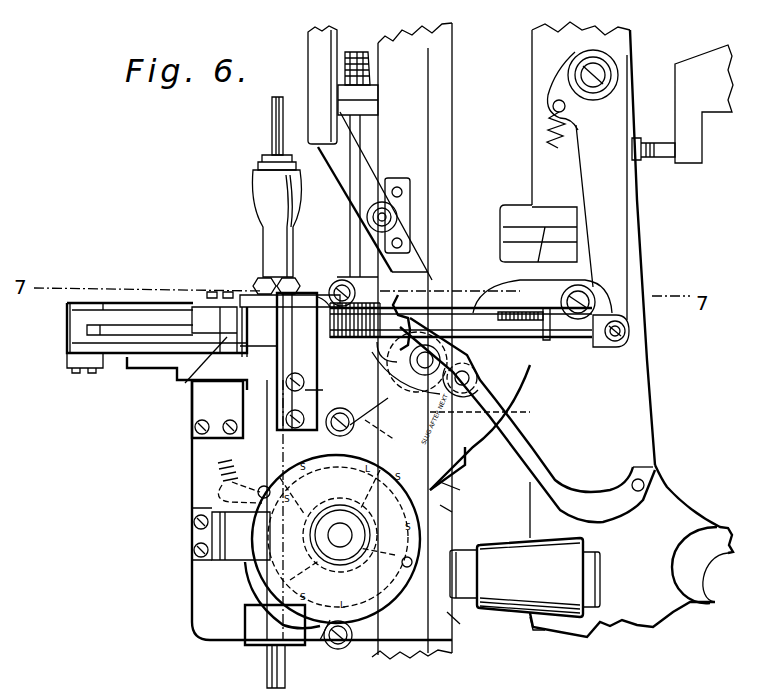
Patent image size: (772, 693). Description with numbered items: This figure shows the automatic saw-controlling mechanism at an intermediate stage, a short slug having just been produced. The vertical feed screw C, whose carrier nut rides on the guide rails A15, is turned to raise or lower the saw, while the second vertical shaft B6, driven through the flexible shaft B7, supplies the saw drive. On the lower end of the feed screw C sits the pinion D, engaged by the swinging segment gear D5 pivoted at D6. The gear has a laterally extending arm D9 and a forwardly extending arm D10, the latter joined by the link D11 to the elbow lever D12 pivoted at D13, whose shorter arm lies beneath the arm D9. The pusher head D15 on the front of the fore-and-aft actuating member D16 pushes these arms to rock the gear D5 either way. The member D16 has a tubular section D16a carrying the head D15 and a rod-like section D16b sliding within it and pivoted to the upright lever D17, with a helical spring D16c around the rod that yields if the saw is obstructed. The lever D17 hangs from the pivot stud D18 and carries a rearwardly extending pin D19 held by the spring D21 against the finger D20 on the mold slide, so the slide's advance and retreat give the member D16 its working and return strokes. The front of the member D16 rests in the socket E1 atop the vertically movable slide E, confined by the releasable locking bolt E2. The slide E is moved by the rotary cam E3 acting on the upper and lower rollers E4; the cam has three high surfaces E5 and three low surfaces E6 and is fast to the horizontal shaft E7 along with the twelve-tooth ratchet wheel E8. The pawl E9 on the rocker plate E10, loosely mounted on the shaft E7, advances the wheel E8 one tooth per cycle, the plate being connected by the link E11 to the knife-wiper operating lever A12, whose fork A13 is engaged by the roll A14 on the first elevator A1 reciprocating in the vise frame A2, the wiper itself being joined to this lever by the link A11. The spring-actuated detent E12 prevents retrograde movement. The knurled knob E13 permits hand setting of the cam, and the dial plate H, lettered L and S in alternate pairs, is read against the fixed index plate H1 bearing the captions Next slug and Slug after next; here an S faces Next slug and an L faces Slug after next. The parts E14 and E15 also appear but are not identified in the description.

The first elevator A1 is at (448, 129).
The vise frame A2 is at (577, 243).
The link A11 is at (638, 470).
The operating lever A12 is at (568, 502).
The fork A13 is at (294, 368).
The roll A14 is at (398, 216).
The guide rails A15 is at (308, 38).
The second vertical shaft B6 is at (272, 130).
The flexible shaft B7 is at (268, 666).
The feed screw C is at (362, 55).
The pinion D is at (384, 298).
The segment gear D5 is at (176, 306).
The pivot D6 is at (248, 278).
The laterally extending arm D9 is at (200, 318).
The forwardly extending arm D10 is at (110, 316).
The link D11 is at (68, 363).
The elbow lever D12 is at (175, 345).
The pivot D13 is at (226, 339).
The pusher head D15 is at (247, 364).
The actuating member D16 is at (461, 320).
The tubular section D16a is at (484, 342).
The rod-like section D16b is at (574, 347).
The helical spring D16c is at (542, 310).
The upright lever D17 is at (613, 226).
The pivot stud D18 is at (582, 62).
The pin D19 is at (655, 160).
The finger D20 is at (690, 134).
The spring D21 is at (550, 140).
The slide E is at (328, 393).
The socket E1 is at (311, 292).
The releasable locking bolt E2 is at (338, 282).
The rotary cam E3 is at (262, 583).
The rollers E4 is at (346, 650).
The high surfaces E5 is at (456, 540).
The low surfaces E6 is at (335, 562).
The horizontal shaft E7 is at (320, 347).
The ratchet wheel E8 is at (454, 511).
The pawl E9 is at (328, 646).
The rocker plate E10 is at (466, 624).
The link E11 is at (480, 429).
The spring-actuated detent E12 is at (376, 403).
The knurled knob E13 is at (330, 536).
The link E14 is at (379, 430).
The spring E15 is at (300, 446).
The dial plate H is at (265, 633).
The index plate H1 is at (462, 468).